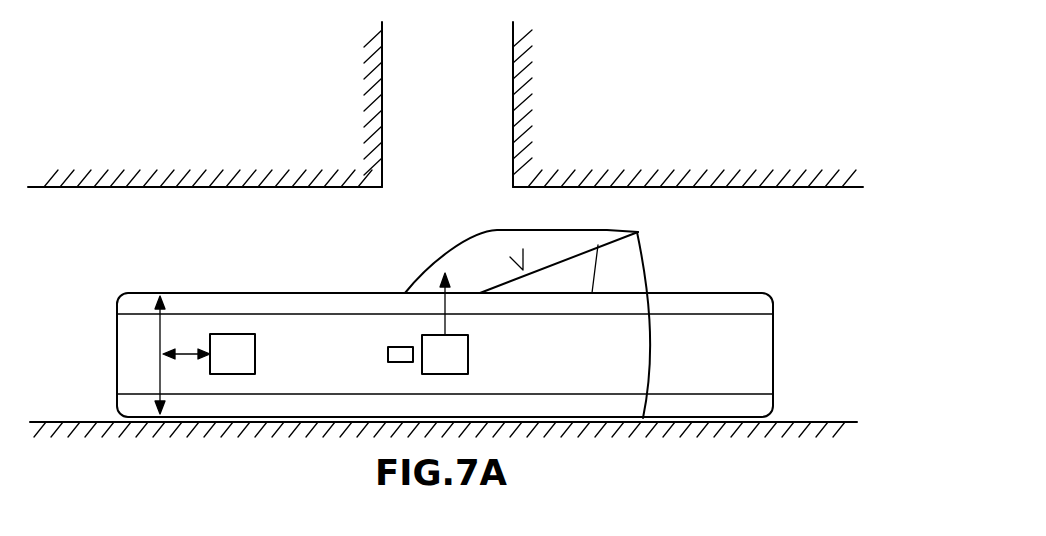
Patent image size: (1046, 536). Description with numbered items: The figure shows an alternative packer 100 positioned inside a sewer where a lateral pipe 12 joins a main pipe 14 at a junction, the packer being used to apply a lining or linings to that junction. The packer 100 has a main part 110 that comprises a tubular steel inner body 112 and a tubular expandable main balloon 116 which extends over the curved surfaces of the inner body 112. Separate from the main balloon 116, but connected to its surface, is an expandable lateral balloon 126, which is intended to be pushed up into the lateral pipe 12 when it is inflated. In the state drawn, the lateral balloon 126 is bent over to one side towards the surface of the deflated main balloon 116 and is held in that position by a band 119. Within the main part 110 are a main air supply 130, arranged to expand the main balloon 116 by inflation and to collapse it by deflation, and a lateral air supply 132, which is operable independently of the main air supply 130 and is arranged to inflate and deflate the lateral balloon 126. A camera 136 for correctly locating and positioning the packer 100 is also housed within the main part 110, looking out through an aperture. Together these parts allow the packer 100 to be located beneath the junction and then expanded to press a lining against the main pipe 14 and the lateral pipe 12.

The lateral pipe 12 is at (513, 118).
The main pipe 14 is at (720, 189).
The packer 100 is at (729, 123).
The main part 110 is at (798, 292).
The tubular steel inner body 112 is at (774, 350).
The main balloon 116 is at (116, 304).
The band 119 is at (632, 262).
The lateral balloon 126 is at (458, 250).
The main air supply 130 is at (256, 350).
The lateral air supply 132 is at (469, 352).
The camera 136 is at (396, 363).